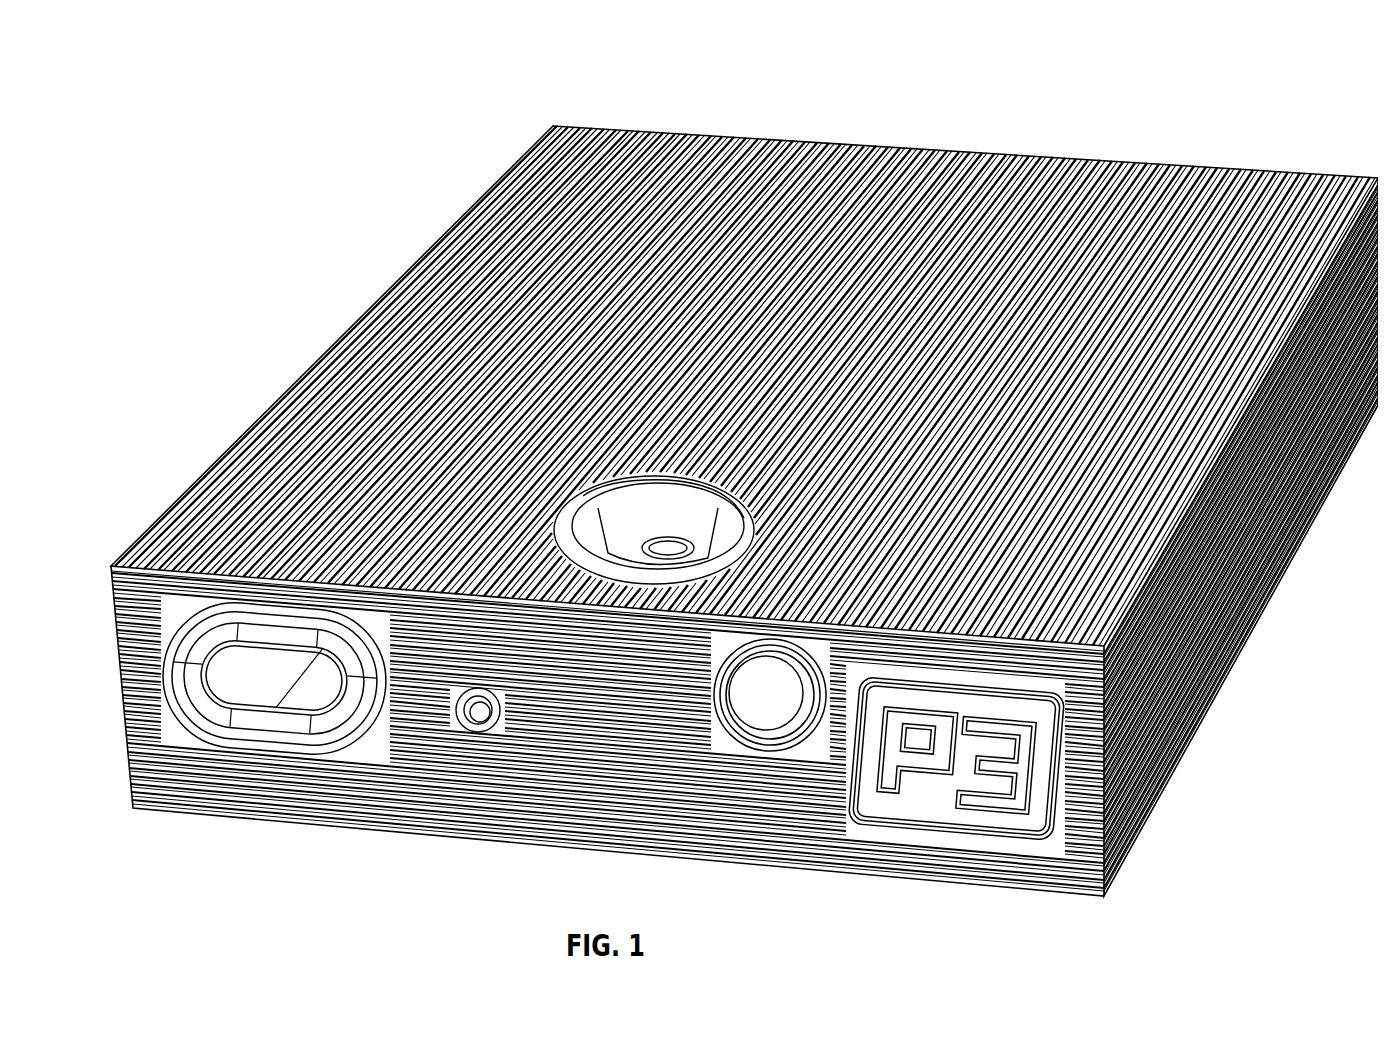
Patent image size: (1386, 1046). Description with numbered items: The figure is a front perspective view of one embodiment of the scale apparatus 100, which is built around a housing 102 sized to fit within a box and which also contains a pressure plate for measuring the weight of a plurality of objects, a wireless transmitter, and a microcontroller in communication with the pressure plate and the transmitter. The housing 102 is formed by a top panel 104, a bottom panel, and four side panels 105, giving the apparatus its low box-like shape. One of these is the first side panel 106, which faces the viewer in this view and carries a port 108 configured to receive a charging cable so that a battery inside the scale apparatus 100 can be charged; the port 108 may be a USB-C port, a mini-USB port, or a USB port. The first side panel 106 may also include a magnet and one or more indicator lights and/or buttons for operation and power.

The scale apparatus 100 is at (158, 78).
The housing 102 is at (1055, 147).
The top panel 104 is at (337, 392).
The side panels 105 is at (1238, 578).
The first side panel 106 is at (437, 790).
The port 108 is at (240, 683).